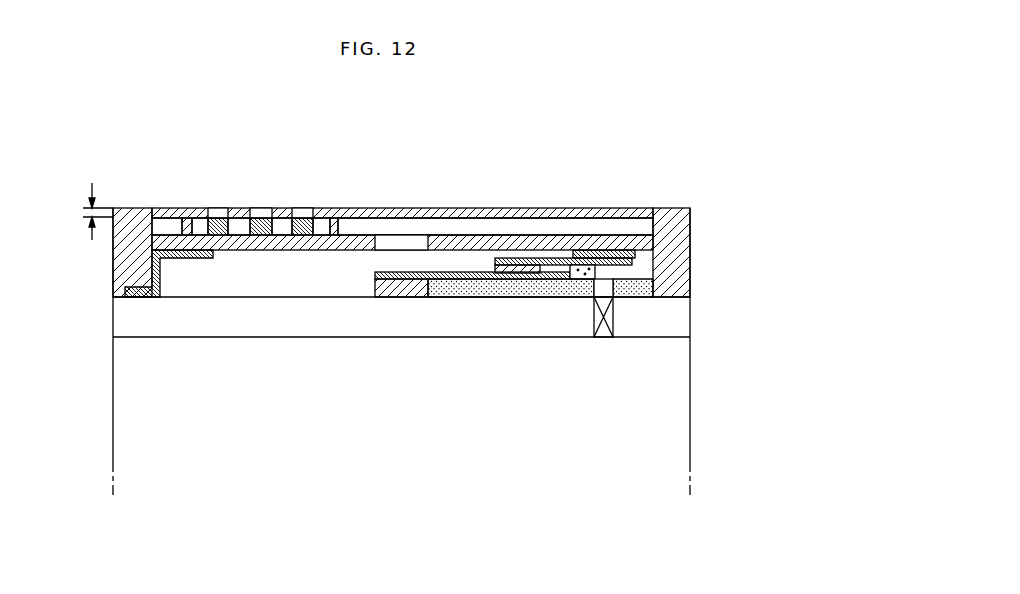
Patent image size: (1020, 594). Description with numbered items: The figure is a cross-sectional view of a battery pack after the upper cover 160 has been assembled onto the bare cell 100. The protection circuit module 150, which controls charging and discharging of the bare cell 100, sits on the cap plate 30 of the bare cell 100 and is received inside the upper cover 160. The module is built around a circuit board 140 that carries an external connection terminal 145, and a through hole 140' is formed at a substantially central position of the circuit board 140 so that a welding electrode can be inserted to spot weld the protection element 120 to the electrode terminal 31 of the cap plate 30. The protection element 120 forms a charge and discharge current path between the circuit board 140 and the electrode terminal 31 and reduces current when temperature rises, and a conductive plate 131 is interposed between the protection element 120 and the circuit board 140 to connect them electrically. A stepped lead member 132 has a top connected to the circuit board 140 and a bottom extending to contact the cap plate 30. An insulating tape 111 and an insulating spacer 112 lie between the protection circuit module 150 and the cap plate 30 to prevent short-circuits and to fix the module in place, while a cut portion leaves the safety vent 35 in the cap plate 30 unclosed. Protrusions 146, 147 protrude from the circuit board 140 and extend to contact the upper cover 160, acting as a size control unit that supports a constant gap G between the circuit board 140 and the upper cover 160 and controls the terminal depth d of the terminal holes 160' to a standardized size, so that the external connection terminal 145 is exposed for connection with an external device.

The upper cover 160 is at (383, 215).
The terminal hole 160' is at (253, 175).
The protrusion 146 is at (188, 230).
The external connection terminal 145 is at (262, 220).
The protrusion 147 is at (332, 218).
The gap G is at (358, 227).
The circuit board 140 is at (402, 191).
The through hole 140' is at (401, 191).
The lead member 132 is at (152, 272).
The conductive plate 131 is at (637, 254).
The protection element 120 is at (513, 279).
The insulating spacer 112 is at (578, 272).
The electrode terminal 31 is at (404, 288).
The insulating tape 111 is at (459, 288).
The safety vent 35 is at (603, 332).
The cap plate 30 is at (673, 315).
The bare cell 100 is at (705, 389).
The protection circuit module 150 is at (705, 283).
The terminal depth d is at (89, 211).